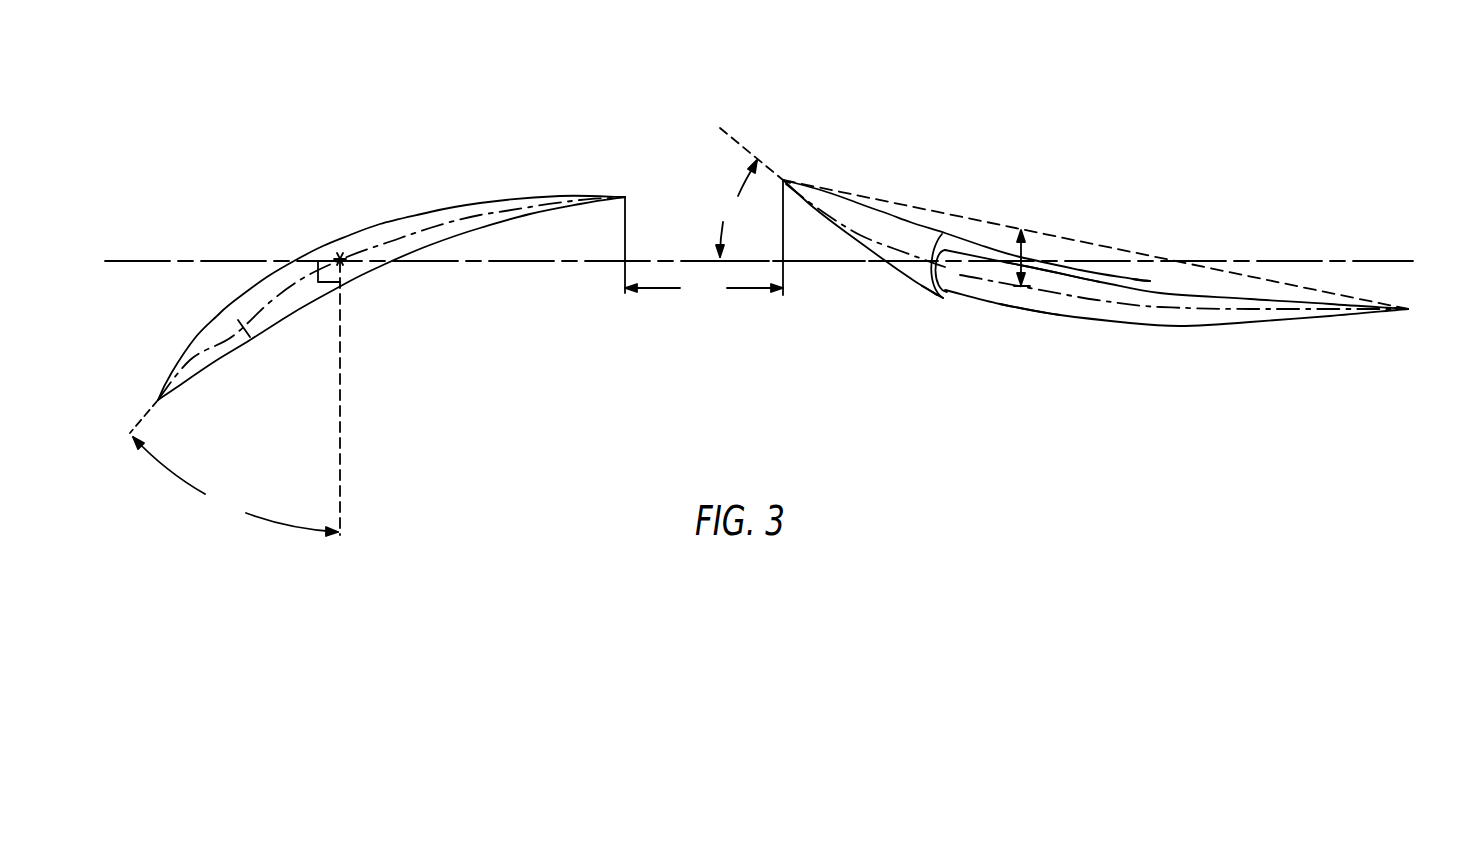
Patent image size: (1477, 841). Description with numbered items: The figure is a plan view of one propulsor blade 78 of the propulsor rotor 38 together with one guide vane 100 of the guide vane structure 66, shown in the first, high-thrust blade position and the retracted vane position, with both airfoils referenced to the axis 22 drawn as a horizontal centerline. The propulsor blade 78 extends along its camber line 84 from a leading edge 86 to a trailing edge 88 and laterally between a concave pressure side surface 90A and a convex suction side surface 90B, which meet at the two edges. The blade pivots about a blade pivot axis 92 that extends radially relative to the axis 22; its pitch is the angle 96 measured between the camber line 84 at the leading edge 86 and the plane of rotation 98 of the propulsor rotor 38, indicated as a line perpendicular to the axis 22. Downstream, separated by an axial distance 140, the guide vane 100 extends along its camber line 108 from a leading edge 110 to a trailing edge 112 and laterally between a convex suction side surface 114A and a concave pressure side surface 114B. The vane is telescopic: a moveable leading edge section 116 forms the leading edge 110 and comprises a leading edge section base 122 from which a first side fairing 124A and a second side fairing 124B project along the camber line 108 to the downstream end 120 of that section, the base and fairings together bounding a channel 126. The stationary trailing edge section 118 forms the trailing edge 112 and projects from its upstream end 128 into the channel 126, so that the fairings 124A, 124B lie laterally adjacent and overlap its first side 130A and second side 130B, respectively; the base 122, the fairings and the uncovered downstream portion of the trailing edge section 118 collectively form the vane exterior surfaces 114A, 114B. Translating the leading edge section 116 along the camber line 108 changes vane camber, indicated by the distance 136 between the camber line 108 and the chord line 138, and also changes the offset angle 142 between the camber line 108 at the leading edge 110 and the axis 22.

The axis 22 is at (120, 258).
The propulsor rotor 38 is at (448, 140).
The propulsor blade 78 is at (384, 321).
The camber line 84 is at (250, 339).
The leading edge 86 is at (158, 400).
The trailing edge 88 is at (628, 195).
The first blade exterior surface 90A is at (290, 312).
The second blade exterior surface 90B is at (263, 274).
The blade pivot axis 92 is at (342, 258).
The angle 96 is at (235, 486).
The plane of rotation 98 is at (341, 441).
The axial distance 140 is at (704, 242).
The guide vane structure 66 is at (1147, 112).
The guide vane 100 is at (1042, 220).
The camber line 108 is at (981, 240).
The leading edge 110 is at (783, 178).
The trailing edge 112 is at (1410, 308).
The first vane exterior surface 114A is at (932, 310).
The second vane exterior surface 114B is at (940, 232).
The leading edge section 116 is at (826, 257).
The trailing edge section 118 is at (1155, 303).
The downstream end 120 is at (1147, 278).
The leading edge section base 122 is at (876, 243).
The first side fairing 124A is at (1025, 312).
The second side fairing 124B is at (1038, 259).
The channel 126 is at (943, 302).
The upstream end 128 is at (942, 248).
The first side 130A is at (1139, 325).
The second side 130B is at (1165, 293).
The distance 136 is at (1034, 290).
The chord line 138 is at (1282, 282).
The offset angle 142 is at (747, 192).